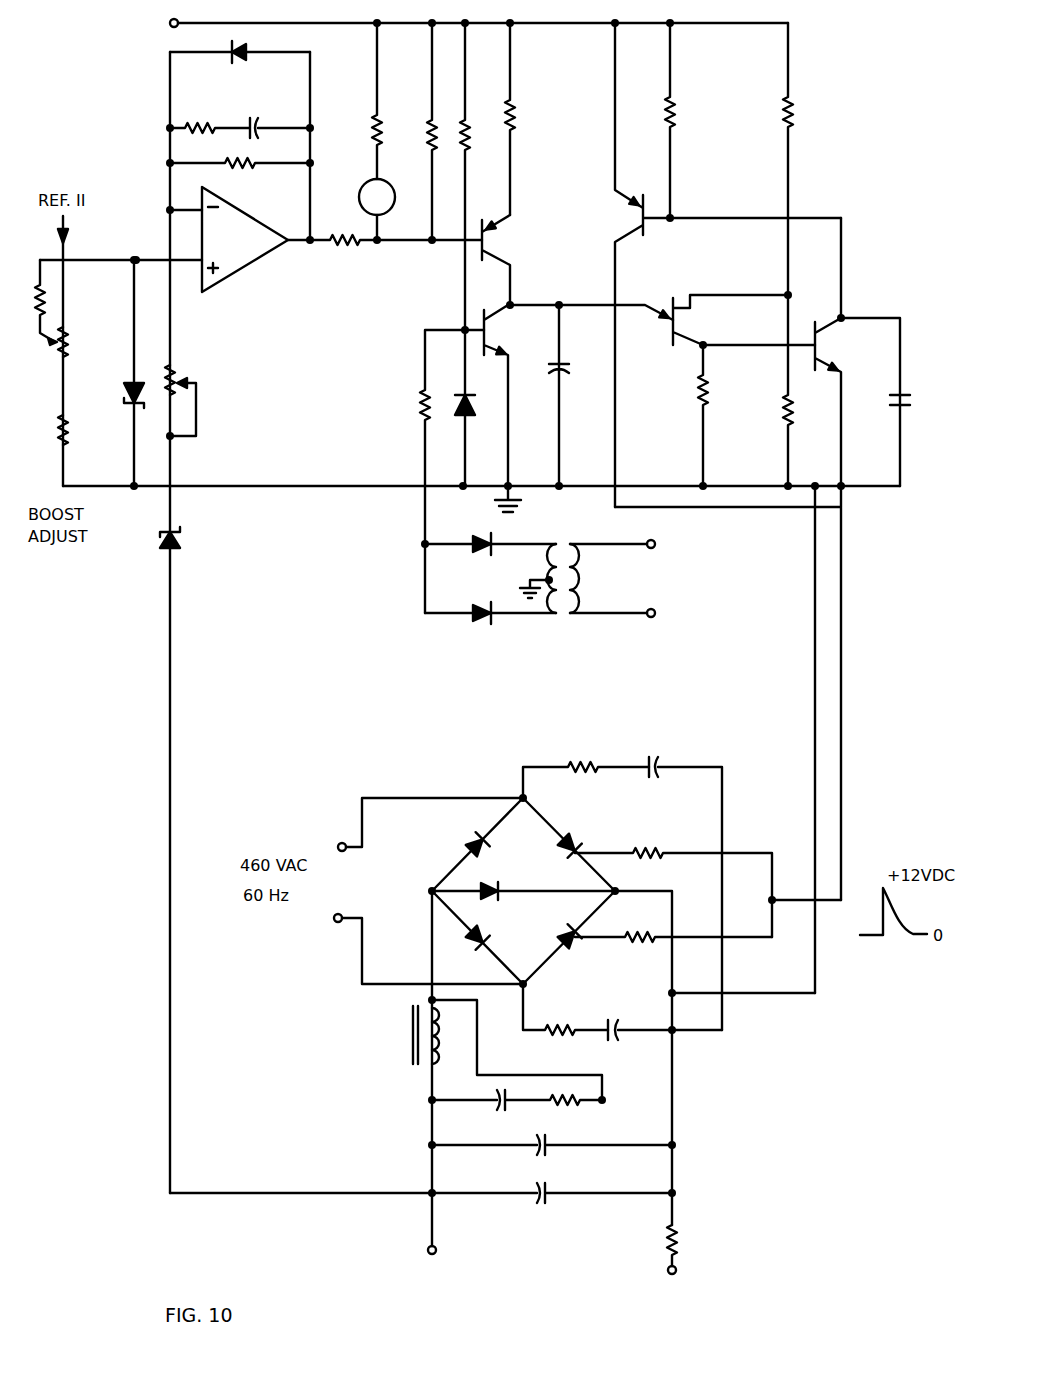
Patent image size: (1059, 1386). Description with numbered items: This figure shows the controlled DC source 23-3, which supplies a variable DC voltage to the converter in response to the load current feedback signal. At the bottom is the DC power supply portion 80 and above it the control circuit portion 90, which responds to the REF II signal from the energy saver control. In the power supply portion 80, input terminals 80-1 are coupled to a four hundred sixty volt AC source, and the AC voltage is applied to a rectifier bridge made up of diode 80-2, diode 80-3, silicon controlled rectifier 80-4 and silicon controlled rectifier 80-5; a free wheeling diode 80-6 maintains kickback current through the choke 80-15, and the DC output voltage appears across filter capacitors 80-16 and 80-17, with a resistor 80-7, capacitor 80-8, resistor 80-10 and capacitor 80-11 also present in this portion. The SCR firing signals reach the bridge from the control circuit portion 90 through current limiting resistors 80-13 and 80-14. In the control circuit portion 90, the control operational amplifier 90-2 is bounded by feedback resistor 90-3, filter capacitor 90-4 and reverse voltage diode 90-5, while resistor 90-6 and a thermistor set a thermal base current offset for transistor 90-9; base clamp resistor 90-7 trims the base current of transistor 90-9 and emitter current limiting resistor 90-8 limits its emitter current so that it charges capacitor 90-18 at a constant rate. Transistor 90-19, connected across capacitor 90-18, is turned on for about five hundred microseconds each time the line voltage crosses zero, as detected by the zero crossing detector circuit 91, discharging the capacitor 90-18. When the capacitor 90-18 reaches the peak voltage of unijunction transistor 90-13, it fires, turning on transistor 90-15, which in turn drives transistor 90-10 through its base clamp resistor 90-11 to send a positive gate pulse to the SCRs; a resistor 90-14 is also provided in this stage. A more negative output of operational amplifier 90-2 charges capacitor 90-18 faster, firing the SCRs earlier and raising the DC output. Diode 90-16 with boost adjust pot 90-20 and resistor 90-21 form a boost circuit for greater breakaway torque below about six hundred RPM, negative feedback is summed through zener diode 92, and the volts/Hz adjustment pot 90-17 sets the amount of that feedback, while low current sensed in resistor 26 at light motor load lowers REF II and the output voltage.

The control circuit portion 90 is at (356, 522).
The control operational amplifier 90-2 is at (232, 282).
The feedback resistor 90-3 is at (238, 170).
The filter capacitor 90-4 is at (256, 124).
The reverse voltage diode 90-5 is at (246, 62).
The resistor 90-6 is at (370, 125).
The base clamp resistor 90-7 is at (430, 127).
The emitter current limiting resistor 90-8 is at (519, 119).
The transistor 90-9 is at (494, 243).
The transistor 90-10 is at (635, 208).
The base clamp resistor 90-11 is at (677, 123).
The unijunction transistor 90-13 is at (688, 317).
The resistor 90-14 is at (699, 395).
The transistor 90-15 is at (822, 342).
The diode 90-16 is at (122, 392).
The volts/Hz adjustment pot 90-17 is at (184, 371).
The capacitor 90-18 is at (575, 371).
The transistor 90-19 is at (491, 327).
The boost adjust pot 90-20 is at (66, 337).
The resistor 90-21 is at (64, 298).
The zero crossing detector circuit 91 is at (562, 545).
The zener diode 92 is at (182, 536).
The DC power supply portion 80 is at (324, 977).
The input terminals 80-1 is at (343, 843).
The diode 80-2 is at (470, 845).
The diode 80-3 is at (476, 950).
The silicon controlled rectifier 80-4 is at (572, 837).
The silicon controlled rectifier 80-5 is at (573, 958).
The free wheeling diode 80-6 is at (508, 886).
The resistor 80-7 is at (576, 762).
The capacitor 80-8 is at (660, 762).
The resistor 80-10 is at (569, 1034).
The capacitor 80-11 is at (622, 1040).
The current limiting resistor 80-13 is at (656, 840).
The current limiting resistor 80-14 is at (630, 946).
The choke 80-15 is at (402, 1036).
The filter capacitor 80-16 is at (548, 1152).
The filter capacitor 80-17 is at (548, 1199).
The resistor 26 is at (680, 1237).
The controlled DC source 23-3 is at (760, 1117).